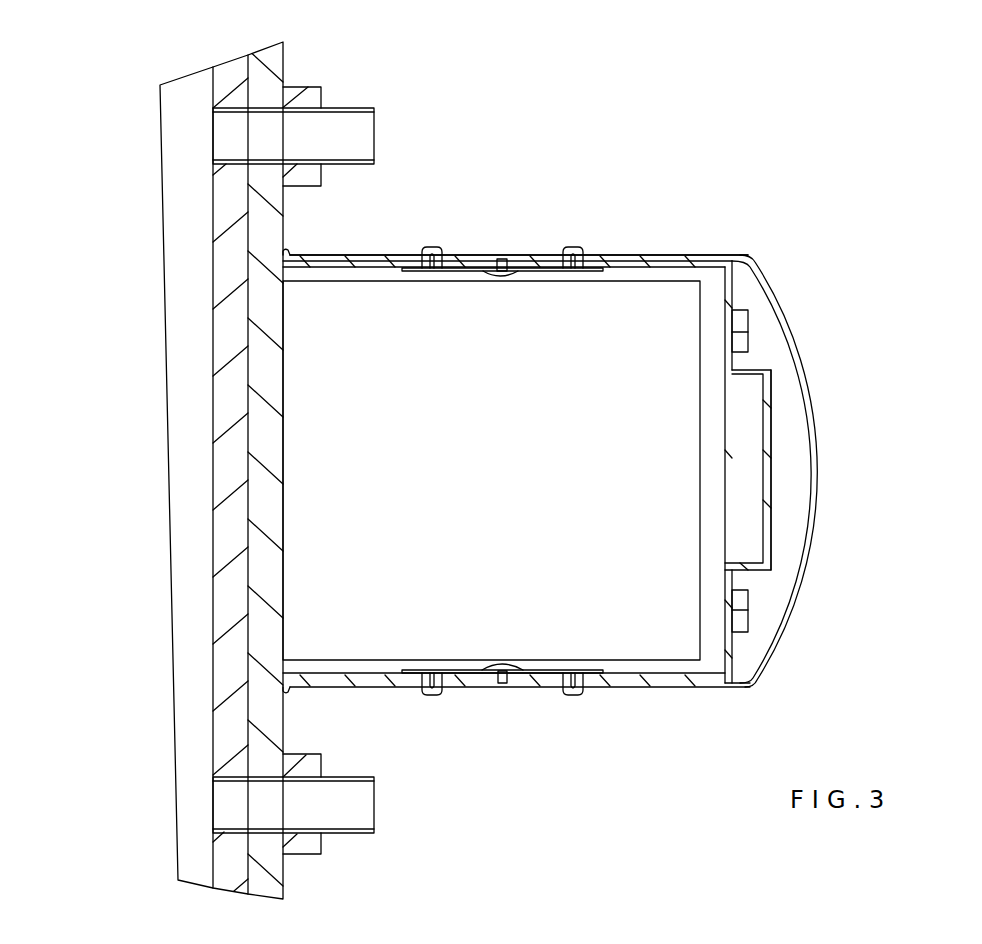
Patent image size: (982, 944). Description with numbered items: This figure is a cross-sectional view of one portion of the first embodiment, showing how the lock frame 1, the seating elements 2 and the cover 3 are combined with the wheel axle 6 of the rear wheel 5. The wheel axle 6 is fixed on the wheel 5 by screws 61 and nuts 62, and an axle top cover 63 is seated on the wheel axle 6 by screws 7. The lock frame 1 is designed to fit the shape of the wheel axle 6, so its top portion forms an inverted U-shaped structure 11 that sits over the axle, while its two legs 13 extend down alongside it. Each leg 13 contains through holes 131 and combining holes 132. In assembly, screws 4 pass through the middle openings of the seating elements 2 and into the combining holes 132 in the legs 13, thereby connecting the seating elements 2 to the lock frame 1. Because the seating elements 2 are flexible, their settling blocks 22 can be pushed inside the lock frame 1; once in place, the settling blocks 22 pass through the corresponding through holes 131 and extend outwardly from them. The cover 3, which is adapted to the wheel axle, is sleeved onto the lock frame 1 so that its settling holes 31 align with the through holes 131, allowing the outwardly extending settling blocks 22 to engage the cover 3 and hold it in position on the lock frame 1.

The lock frame 1 is at (727, 285).
The seating elements 2 is at (550, 257).
The cover 3 is at (797, 330).
The screws 4 is at (503, 257).
The rear wheel 5 is at (257, 71).
The wheel axle 6 is at (676, 540).
The screws 7 is at (738, 322).
The inverted U-shaped structure 11 is at (773, 398).
The legs 13 is at (672, 265).
The settling blocks 22 is at (435, 253).
The settling holes 31 is at (443, 687).
The screws 61 is at (353, 141).
The nuts 62 is at (312, 99).
The axle top cover 63 is at (747, 490).
The through holes 131 is at (415, 255).
The combining holes 132 is at (508, 257).